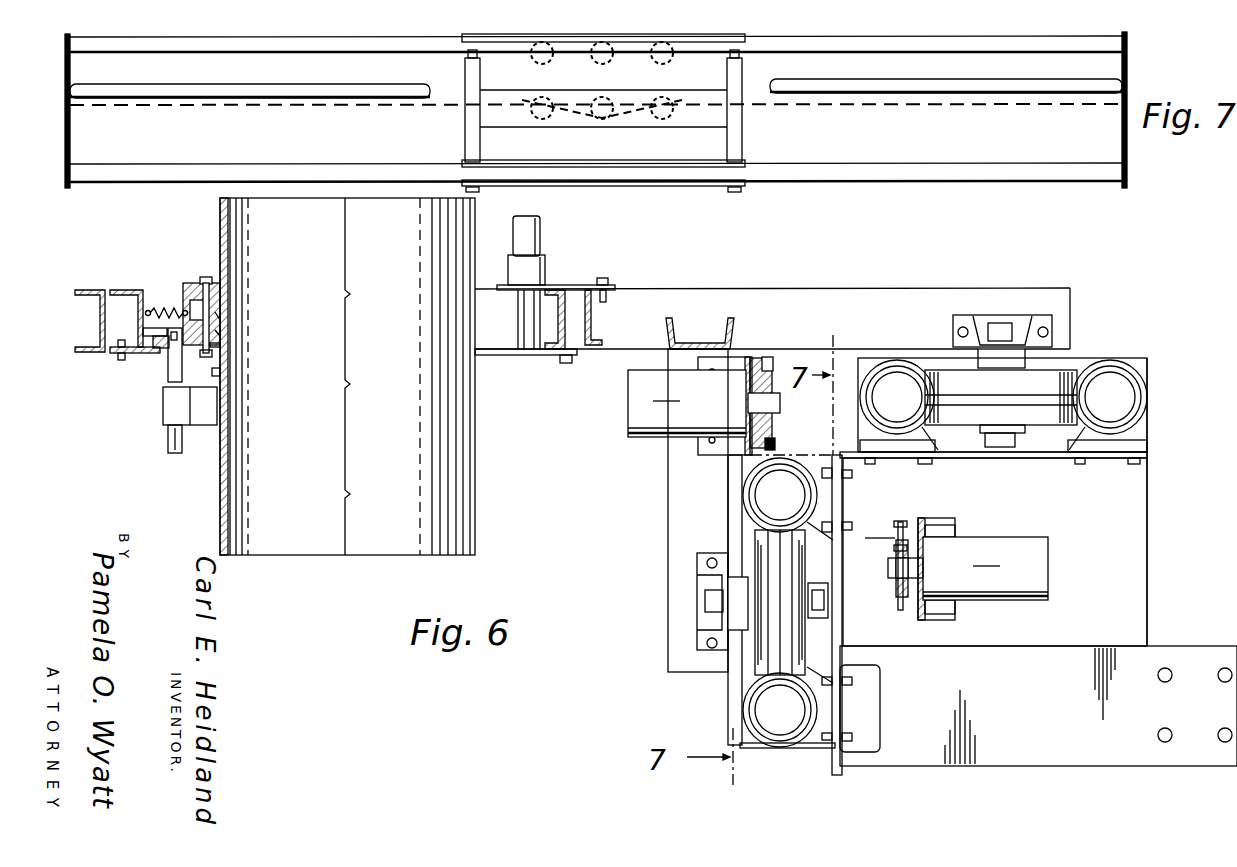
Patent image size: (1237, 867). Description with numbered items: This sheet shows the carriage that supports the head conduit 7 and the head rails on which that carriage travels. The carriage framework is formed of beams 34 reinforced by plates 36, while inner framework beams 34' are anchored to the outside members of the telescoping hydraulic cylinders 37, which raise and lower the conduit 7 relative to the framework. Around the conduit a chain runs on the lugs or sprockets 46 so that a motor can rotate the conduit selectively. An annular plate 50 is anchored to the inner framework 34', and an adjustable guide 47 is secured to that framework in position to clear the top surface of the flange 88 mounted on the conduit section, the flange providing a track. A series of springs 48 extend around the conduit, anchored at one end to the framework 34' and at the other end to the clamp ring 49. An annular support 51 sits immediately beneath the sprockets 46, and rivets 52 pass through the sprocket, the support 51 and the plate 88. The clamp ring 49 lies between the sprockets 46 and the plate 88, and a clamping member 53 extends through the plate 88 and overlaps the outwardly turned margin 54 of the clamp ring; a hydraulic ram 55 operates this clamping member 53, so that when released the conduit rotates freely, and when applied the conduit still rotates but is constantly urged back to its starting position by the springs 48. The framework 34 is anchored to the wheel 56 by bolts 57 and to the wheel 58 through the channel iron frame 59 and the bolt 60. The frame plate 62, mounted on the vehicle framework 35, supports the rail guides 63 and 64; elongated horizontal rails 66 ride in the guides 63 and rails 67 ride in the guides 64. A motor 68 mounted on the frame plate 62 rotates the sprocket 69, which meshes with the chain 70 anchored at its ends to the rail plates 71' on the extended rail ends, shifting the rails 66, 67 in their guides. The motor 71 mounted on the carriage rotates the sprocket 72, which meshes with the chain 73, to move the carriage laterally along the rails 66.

In FIG. 6, the conduit 7 is at (322, 566).
In FIG. 6, the beam 34 is at (562, 325).
In FIG. 6, the inner framework beam 34' is at (115, 297).
In FIG. 6, the vehicle framework 35 is at (1236, 626).
In FIG. 6, the plate 36 is at (575, 286).
In FIG. 6, the telescoping hydraulic cylinder 37 is at (541, 240).
In FIG. 6, the sprocket 46 is at (197, 283).
In FIG. 6, the adjustable guide 47 is at (147, 330).
In FIG. 6, the spring 48 is at (148, 310).
In FIG. 6, the clamp ring 49 is at (215, 316).
In FIG. 6, the annular plate 50 is at (112, 358).
In FIG. 6, the annular support 51 is at (215, 333).
In FIG. 6, the rivet 52 is at (215, 345).
In FIG. 6, the clamping member 53 is at (168, 368).
In FIG. 6, the outwardly turned margin 54 is at (215, 372).
In FIG. 6, the hydraulic ram 55 is at (167, 412).
In FIG. 6, the wheel 56 is at (1058, 372).
In FIG. 6, the bolt 57 is at (995, 323).
In FIG. 6, the wheel 58 is at (762, 668).
In FIG. 6, the channel iron frame 59 is at (690, 542).
In FIG. 6, the bolt 60 is at (700, 607).
In FIG. 6, the frame plate 62 is at (1112, 462).
In FIG. 7, the rail guide 63 is at (745, 162).
In FIG. 6, the rail guide 63 is at (810, 747).
In FIG. 6, the rail guide 64 is at (1147, 405).
In FIG. 7, the rail 66 is at (1010, 163).
In FIG. 6, the rail 66 is at (762, 500).
In FIG. 7, the rail 67 is at (1058, 80).
In FIG. 6, the rail 67 is at (883, 378).
In FIG. 7, the motor 68 is at (602, 118).
In FIG. 6, the motor 68 is at (983, 569).
In FIG. 6, the sprocket 69 is at (895, 587).
In FIG. 7, the chain 70 is at (432, 100).
In FIG. 6, the chain 70 is at (897, 521).
In FIG. 7, the motor 71 is at (602, 32).
In FIG. 6, the motor 71 is at (690, 406).
In FIG. 7, the rail plate 71' is at (596, 110).
In FIG. 6, the rail plate 71' is at (1022, 552).
In FIG. 6, the sprocket 72 is at (767, 365).
In FIG. 6, the chain 73 is at (775, 446).
In FIG. 6, the flange 88 is at (153, 358).